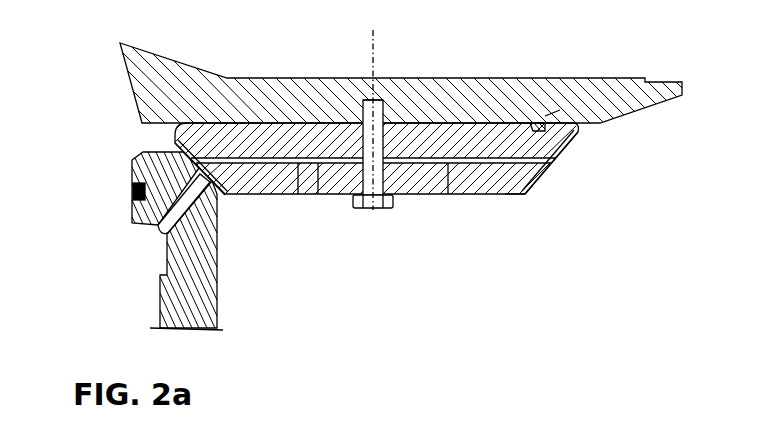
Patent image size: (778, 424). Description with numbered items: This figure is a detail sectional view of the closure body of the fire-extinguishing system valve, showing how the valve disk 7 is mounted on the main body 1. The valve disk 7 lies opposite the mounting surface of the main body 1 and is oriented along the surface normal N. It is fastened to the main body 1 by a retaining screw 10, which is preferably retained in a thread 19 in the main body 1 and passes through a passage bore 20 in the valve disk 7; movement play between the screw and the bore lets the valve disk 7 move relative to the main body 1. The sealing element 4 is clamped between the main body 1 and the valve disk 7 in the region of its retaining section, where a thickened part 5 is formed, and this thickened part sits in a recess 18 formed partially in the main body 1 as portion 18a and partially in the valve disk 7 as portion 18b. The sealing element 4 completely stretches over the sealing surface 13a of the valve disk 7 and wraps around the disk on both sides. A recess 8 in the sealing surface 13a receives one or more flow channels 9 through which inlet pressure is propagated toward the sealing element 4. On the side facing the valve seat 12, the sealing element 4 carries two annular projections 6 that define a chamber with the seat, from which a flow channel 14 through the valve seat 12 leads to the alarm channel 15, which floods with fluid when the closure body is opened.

The main body 1 is at (183, 87).
The sealing element 4 is at (522, 194).
The thickened part 5 is at (533, 121).
The annular projection 6 is at (572, 140).
The valve disk 7 is at (318, 123).
The recess 8 is at (228, 123).
The flow channel 9 is at (300, 165).
The retaining screw 10 is at (372, 212).
The valve seat 12 is at (173, 308).
The sealing surface 13a is at (247, 123).
The flow channel 14 is at (153, 223).
The alarm channel 15 is at (153, 242).
The recess 18 is at (145, 153).
The recess 18a is at (548, 105).
The recess 18b is at (517, 194).
The thread 19 is at (392, 110).
The passage bore 20 is at (396, 200).
The surface normal N is at (375, 42).